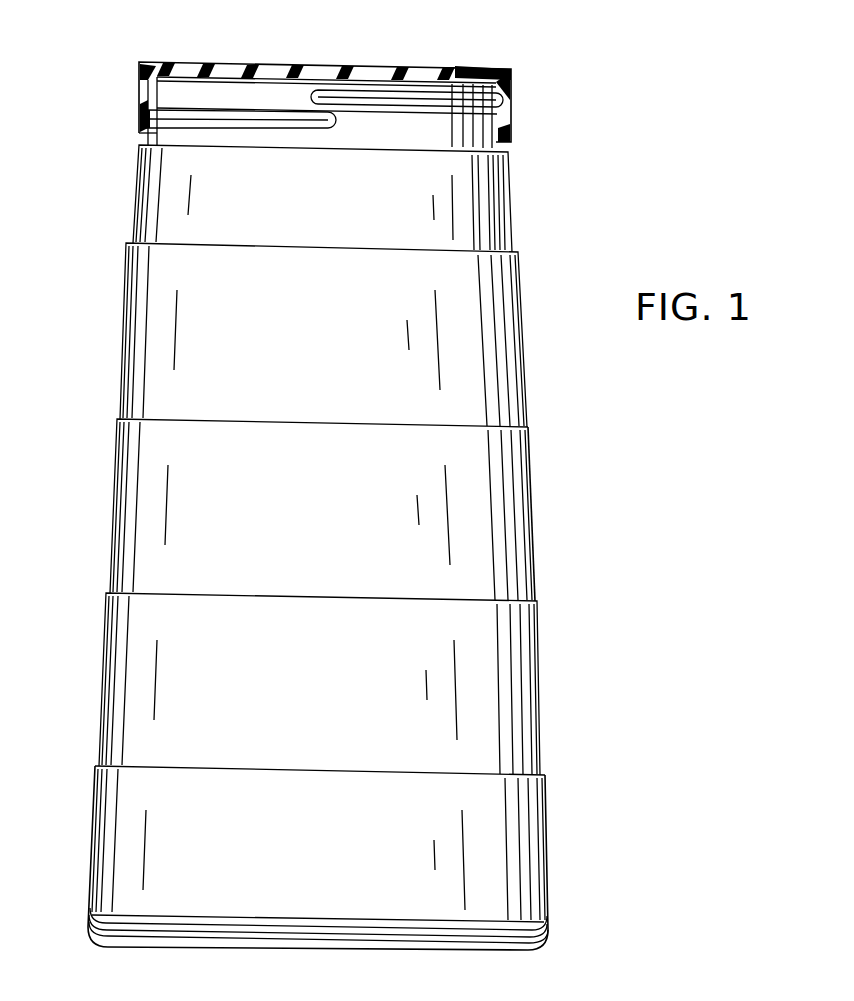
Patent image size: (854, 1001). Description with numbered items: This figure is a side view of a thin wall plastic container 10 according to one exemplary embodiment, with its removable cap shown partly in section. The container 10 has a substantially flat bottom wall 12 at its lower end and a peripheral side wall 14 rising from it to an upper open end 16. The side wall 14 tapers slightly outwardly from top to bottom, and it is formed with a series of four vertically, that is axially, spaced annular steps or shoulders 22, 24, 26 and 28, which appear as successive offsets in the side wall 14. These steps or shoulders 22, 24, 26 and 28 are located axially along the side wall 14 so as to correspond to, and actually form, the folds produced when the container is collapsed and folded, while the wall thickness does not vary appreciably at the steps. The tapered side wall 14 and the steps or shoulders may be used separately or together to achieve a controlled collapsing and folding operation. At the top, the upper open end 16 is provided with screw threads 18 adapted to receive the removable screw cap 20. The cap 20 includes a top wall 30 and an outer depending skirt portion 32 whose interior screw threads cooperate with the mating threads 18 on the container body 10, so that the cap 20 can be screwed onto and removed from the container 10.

The thin wall plastic container 10 is at (317, 565).
The bottom wall 12 is at (533, 958).
The peripheral side wall 14 is at (541, 539).
The upper open end 16 is at (498, 148).
The screw threads 18 is at (500, 113).
The removable screw cap 20 is at (323, 80).
The annular step or shoulder 22 is at (129, 243).
The annular step or shoulder 24 is at (333, 489).
The annular step or shoulder 26 is at (108, 592).
The annular step or shoulder 28 is at (318, 857).
The top wall 30 is at (167, 62).
The outer depending skirt portion 32 is at (139, 92).